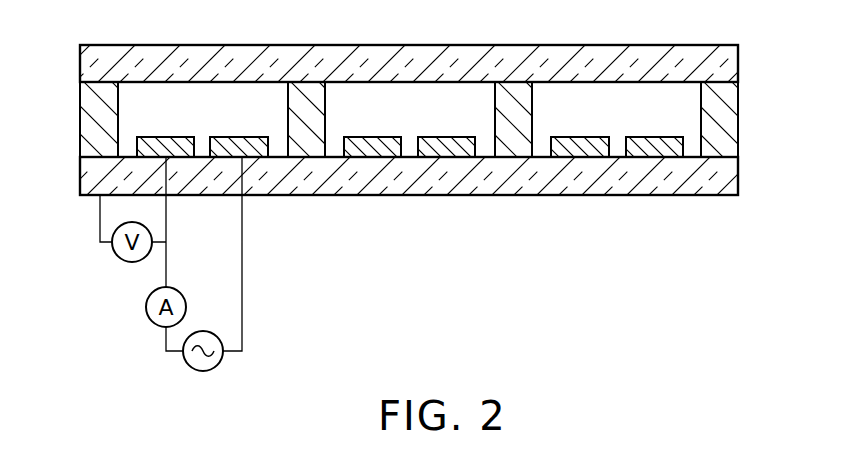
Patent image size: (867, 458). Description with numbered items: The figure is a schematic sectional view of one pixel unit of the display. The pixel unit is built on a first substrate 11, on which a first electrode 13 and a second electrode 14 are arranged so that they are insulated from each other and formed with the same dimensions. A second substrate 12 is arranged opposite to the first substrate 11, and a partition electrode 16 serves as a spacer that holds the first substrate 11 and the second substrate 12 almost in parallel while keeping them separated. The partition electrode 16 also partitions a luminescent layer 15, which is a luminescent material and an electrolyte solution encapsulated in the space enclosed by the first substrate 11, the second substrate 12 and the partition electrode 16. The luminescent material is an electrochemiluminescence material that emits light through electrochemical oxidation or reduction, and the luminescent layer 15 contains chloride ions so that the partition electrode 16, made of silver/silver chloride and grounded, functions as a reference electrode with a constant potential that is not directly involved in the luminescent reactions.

The first substrate 11 is at (709, 175).
The second substrate 12 is at (640, 60).
The first electrode 13 is at (181, 147).
The second electrode 14 is at (255, 147).
The luminescent layer 15 is at (183, 97).
The partition electrode 16 is at (101, 95).